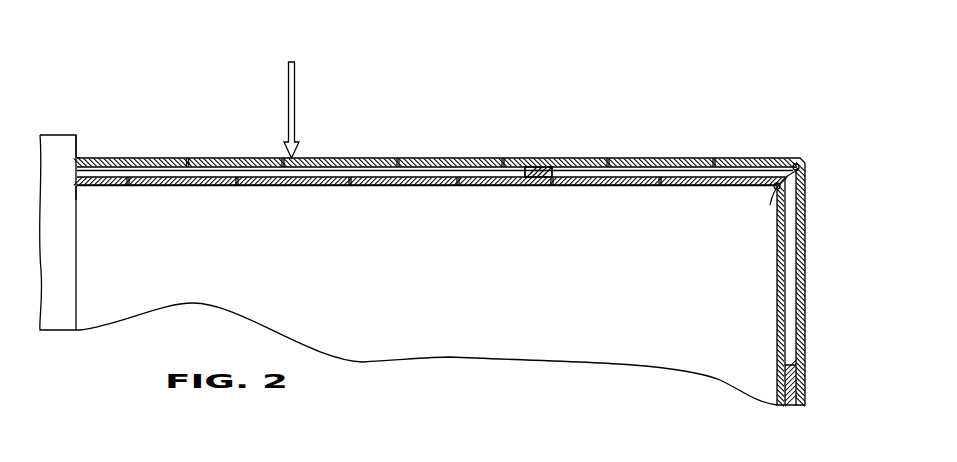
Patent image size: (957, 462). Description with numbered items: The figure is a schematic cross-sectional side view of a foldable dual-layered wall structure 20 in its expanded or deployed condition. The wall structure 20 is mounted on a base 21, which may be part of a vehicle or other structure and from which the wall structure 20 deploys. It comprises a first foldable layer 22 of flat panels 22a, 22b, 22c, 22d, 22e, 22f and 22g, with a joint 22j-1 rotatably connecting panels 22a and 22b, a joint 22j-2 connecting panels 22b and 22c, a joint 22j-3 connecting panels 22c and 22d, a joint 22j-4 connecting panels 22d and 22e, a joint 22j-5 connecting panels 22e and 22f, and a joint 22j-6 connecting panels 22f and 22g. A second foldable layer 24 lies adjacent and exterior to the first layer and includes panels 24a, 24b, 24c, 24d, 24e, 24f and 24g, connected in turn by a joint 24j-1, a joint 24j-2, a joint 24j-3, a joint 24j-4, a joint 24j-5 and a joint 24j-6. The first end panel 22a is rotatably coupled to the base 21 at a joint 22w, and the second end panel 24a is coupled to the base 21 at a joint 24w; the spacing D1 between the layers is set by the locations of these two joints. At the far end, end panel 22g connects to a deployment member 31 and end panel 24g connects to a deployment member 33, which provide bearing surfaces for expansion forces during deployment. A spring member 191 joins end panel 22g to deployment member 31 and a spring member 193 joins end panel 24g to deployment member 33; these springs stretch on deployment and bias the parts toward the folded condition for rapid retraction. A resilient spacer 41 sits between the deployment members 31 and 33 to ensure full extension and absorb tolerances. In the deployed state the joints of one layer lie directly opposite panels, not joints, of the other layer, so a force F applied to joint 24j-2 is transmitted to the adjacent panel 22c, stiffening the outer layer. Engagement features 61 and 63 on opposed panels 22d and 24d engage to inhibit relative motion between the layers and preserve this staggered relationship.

The foldable dual-layered wall structure 20 is at (355, 105).
The base 21 is at (63, 308).
The first foldable layer 22 is at (427, 291).
The first end panel 22a is at (110, 187).
The panel 22b is at (192, 187).
The panel 22c is at (305, 187).
The panel 22d is at (417, 187).
The panel 22e is at (522, 187).
The panel 22f is at (635, 187).
The end panel 22g is at (753, 187).
The joint 22j-1 is at (128, 187).
The joint 22j-2 is at (237, 187).
The joint 22j-3 is at (350, 187).
The joint 22j-4 is at (458, 187).
The joint 22j-5 is at (552, 187).
The joint 22j-6 is at (660, 187).
The joint 22w is at (70, 190).
The second foldable layer 24 is at (422, 108).
The second end panel 24a is at (98, 158).
The panel 24b is at (226, 158).
The panel 24c is at (323, 158).
The panel 24d is at (438, 158).
The panel 24e is at (540, 158).
The panel 24f is at (682, 158).
The end panel 24g is at (776, 158).
The joint 24j-1 is at (186, 172).
The joint 24j-2 is at (285, 158).
The joint 24j-3 is at (398, 158).
The joint 24j-4 is at (503, 158).
The joint 24j-5 is at (610, 158).
The joint 24j-6 is at (714, 158).
The joint 24w is at (78, 163).
The deployment member 31 is at (786, 300).
The deployment member 33 is at (805, 340).
The spacer 41 is at (796, 380).
The first engagement feature 61 is at (540, 187).
The second engagement feature 63 is at (538, 172).
The spring member 191 is at (786, 200).
The spring member 193 is at (803, 193).
The spacing D1 is at (189, 163).
The force F is at (291, 98).